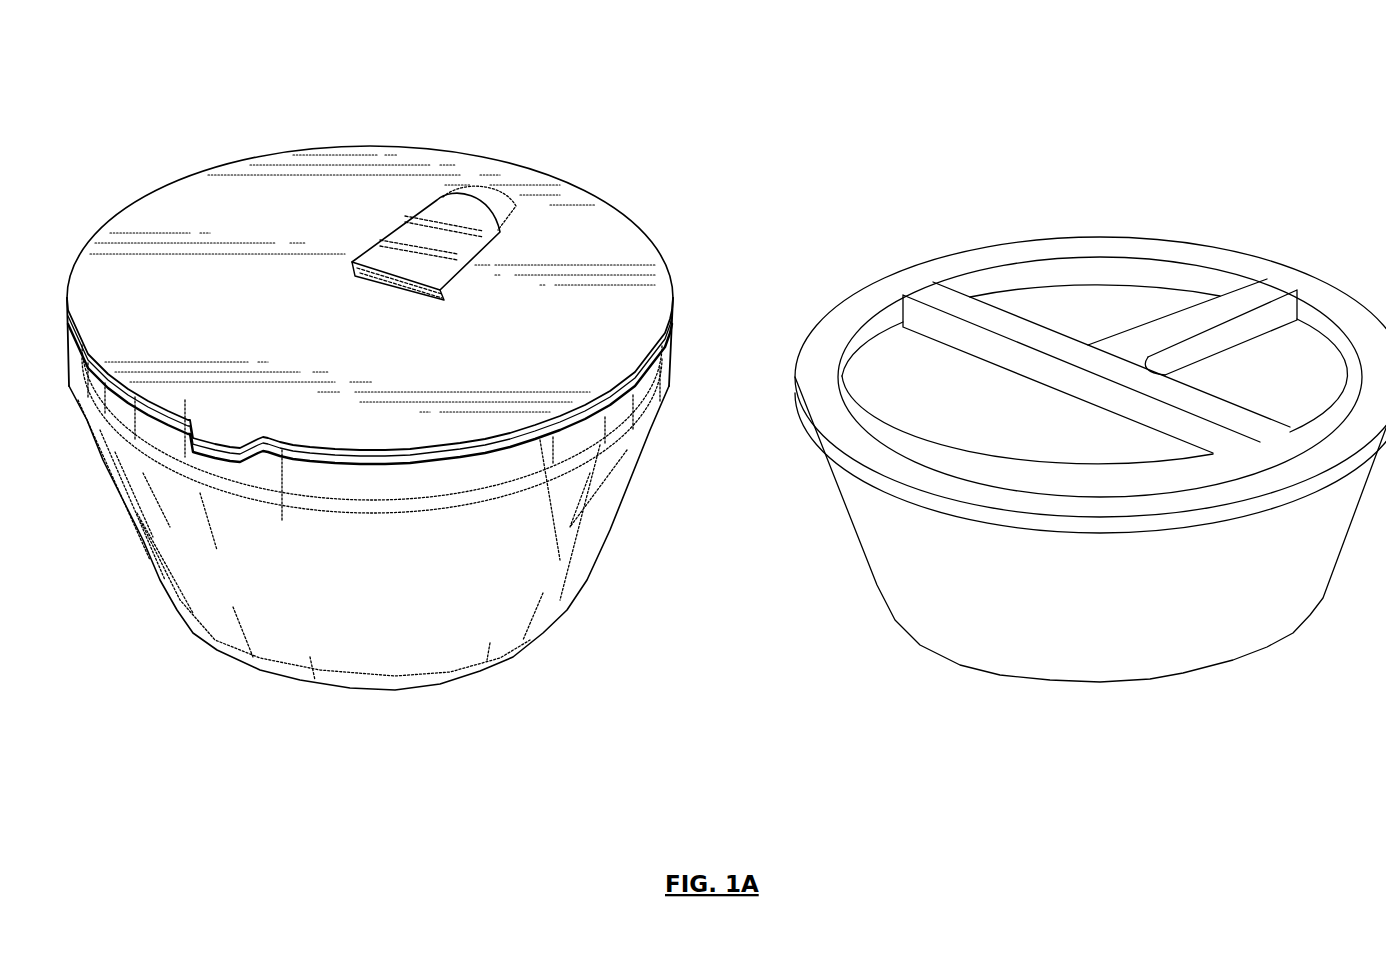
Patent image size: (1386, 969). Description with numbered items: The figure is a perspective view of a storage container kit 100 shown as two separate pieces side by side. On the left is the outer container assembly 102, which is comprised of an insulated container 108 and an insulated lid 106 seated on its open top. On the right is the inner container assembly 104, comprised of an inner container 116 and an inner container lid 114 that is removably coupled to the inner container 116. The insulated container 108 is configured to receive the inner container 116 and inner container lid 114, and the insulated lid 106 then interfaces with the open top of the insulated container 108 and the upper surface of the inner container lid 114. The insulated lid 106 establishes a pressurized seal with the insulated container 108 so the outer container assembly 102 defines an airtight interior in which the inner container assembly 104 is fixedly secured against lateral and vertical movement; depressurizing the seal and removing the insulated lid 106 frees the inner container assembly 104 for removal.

The storage container kit 100 is at (1188, 112).
The outer container assembly 102 is at (116, 152).
The inner container assembly 104 is at (1323, 247).
The insulated lid 106 is at (556, 222).
The insulated container 108 is at (580, 520).
The inner container lid 114 is at (850, 308).
The inner container 116 is at (890, 560).